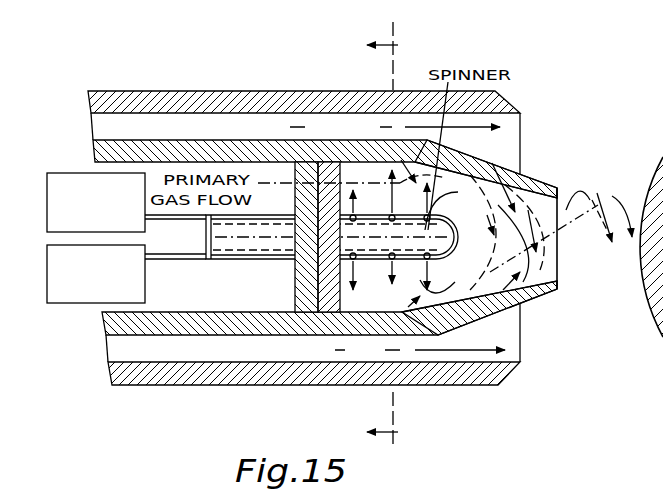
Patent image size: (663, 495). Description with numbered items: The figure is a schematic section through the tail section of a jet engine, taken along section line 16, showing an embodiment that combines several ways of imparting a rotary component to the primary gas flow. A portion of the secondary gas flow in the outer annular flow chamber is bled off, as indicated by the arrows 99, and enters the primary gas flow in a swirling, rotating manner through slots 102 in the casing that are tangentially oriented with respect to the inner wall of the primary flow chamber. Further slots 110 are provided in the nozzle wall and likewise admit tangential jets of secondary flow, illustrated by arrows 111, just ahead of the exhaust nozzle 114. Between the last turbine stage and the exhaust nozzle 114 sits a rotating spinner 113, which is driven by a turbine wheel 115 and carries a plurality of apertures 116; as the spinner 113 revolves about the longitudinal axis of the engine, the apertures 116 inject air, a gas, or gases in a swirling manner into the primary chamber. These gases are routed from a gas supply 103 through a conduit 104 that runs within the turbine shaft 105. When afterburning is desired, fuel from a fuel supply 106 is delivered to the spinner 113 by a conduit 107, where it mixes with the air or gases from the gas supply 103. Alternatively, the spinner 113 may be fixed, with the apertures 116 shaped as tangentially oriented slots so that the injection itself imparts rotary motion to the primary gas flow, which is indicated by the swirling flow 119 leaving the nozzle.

The section line 16 is at (393, 240).
The arrows 99 is at (384, 337).
The slots 102 is at (388, 150).
The gas supply 103 is at (90, 173).
The conduit 104 is at (199, 220).
The turbine shaft 105 is at (221, 260).
The fuel supply 106 is at (91, 303).
The conduit 107 is at (197, 259).
The slots 110 is at (496, 164).
The arrows 111 is at (499, 233).
The spinner 113 is at (445, 200).
The exhaust nozzle 114 is at (540, 300).
The turbine wheel 115 is at (296, 300).
The apertures 116 is at (390, 230).
The flame 119 is at (599, 206).